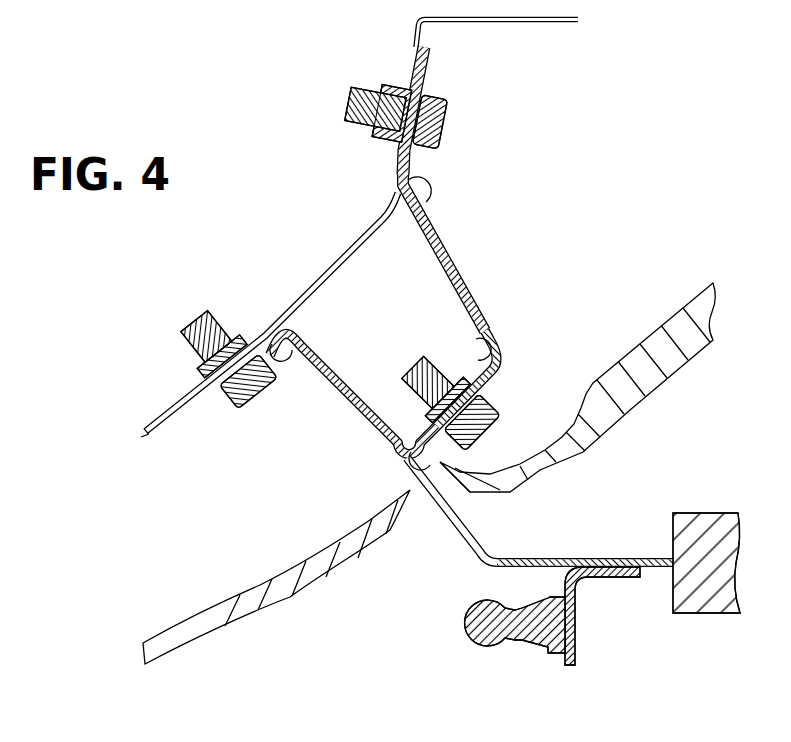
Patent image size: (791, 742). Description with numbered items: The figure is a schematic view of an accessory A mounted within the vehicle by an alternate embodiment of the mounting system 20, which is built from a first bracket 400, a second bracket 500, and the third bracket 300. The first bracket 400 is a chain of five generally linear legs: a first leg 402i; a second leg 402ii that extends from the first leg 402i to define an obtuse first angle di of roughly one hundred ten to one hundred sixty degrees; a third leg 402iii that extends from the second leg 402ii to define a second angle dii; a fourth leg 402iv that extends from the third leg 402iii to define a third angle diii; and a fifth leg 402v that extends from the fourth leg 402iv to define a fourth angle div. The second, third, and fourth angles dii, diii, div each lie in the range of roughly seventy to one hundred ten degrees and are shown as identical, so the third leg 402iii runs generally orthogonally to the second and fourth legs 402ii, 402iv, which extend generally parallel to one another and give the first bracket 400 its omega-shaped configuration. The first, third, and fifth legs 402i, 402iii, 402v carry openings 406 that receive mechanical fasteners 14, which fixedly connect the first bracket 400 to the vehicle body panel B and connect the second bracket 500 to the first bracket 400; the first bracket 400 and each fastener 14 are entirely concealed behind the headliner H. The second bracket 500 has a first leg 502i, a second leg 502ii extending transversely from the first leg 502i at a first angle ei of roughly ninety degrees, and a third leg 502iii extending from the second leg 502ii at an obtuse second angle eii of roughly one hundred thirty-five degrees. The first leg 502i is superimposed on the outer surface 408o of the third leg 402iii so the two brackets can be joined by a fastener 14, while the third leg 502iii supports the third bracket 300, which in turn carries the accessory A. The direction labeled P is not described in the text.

The mechanical fastener 14 is at (450, 125).
The mounting system 20 is at (590, 127).
The third bracket 300 is at (615, 622).
The first bracket 400 is at (542, 242).
The first leg 402i is at (432, 66).
The second leg 402ii is at (455, 248).
The third leg 402iii is at (507, 374).
The fourth leg 402iv is at (367, 412).
The fifth leg 402v is at (206, 422).
The opening 406 is at (392, 88).
The outer surface 408o is at (507, 382).
The second bracket 500 is at (441, 594).
The first leg 502i is at (505, 490).
The second leg 502ii is at (450, 532).
The third leg 502iii is at (635, 557).
The accessory A is at (709, 512).
The body panel B is at (182, 382).
The impact load direction P is at (150, 428).
The headliner H is at (208, 627).
The first angle di is at (421, 207).
The second angle dii is at (476, 345).
The third angle diii is at (417, 422).
The fourth angle div is at (274, 348).
The first angle ei is at (401, 466).
The second angle eii is at (523, 557).